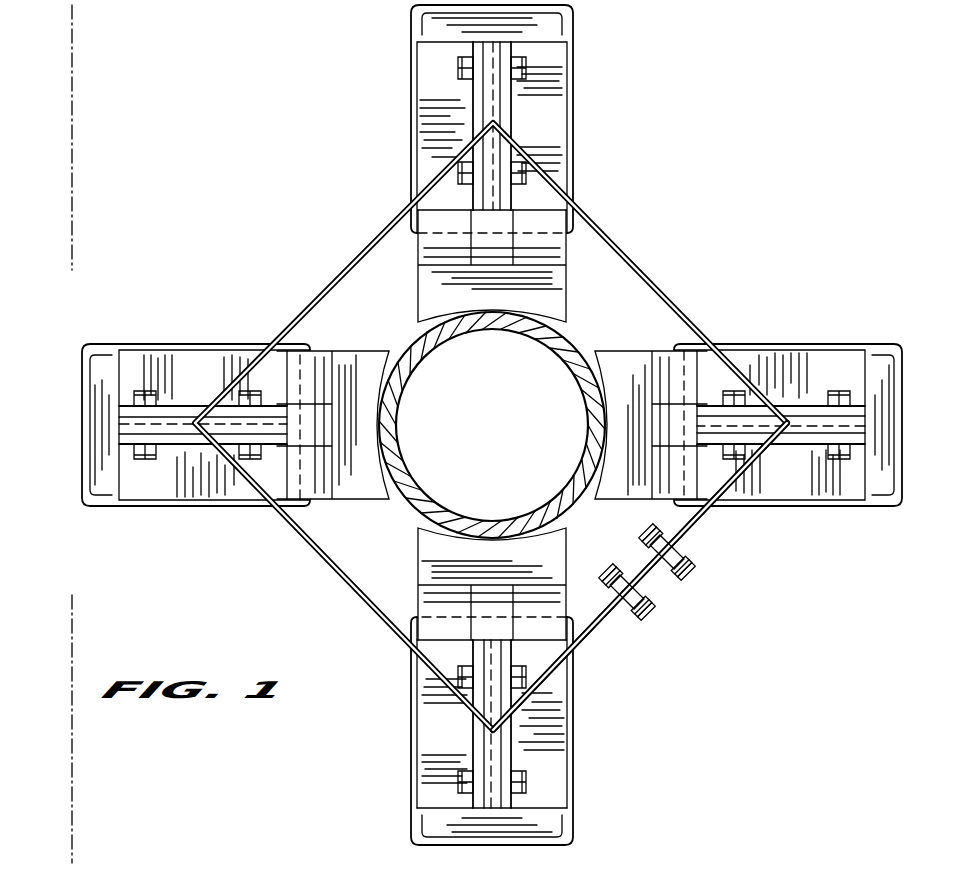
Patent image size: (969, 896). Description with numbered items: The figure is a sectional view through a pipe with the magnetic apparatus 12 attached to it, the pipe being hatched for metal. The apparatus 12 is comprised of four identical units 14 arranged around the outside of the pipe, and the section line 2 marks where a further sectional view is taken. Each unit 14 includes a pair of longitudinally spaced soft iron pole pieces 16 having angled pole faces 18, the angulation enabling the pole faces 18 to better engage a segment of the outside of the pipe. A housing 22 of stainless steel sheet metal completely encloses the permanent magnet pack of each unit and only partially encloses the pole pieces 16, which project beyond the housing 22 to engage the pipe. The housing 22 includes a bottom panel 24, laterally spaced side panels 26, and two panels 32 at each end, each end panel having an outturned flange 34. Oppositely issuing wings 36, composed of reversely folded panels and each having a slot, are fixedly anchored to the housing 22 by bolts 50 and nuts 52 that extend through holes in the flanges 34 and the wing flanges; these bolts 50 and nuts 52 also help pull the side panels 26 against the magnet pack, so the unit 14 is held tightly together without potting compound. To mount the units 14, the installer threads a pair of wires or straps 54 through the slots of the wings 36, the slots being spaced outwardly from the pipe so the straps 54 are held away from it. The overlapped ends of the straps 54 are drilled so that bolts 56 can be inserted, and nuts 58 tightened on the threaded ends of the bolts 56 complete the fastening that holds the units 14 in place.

The section line 2- 2 is at (52, 17).
The apparatus 12 is at (642, 239).
The unit 14 is at (408, 129).
The pole piece 16 is at (420, 268).
The pole face 18 is at (423, 322).
The housing 22 is at (582, 73).
The bottom panel 24 is at (560, 848).
The side panel 26 is at (577, 758).
The end panel 32 is at (428, 160).
The outturned flange 34 is at (474, 100).
The wing 36 is at (522, 106).
The bolt 50 is at (466, 66).
The nut 52 is at (529, 64).
The strap 54 is at (612, 622).
The bolt 56 is at (648, 592).
The nut 58 is at (658, 540).